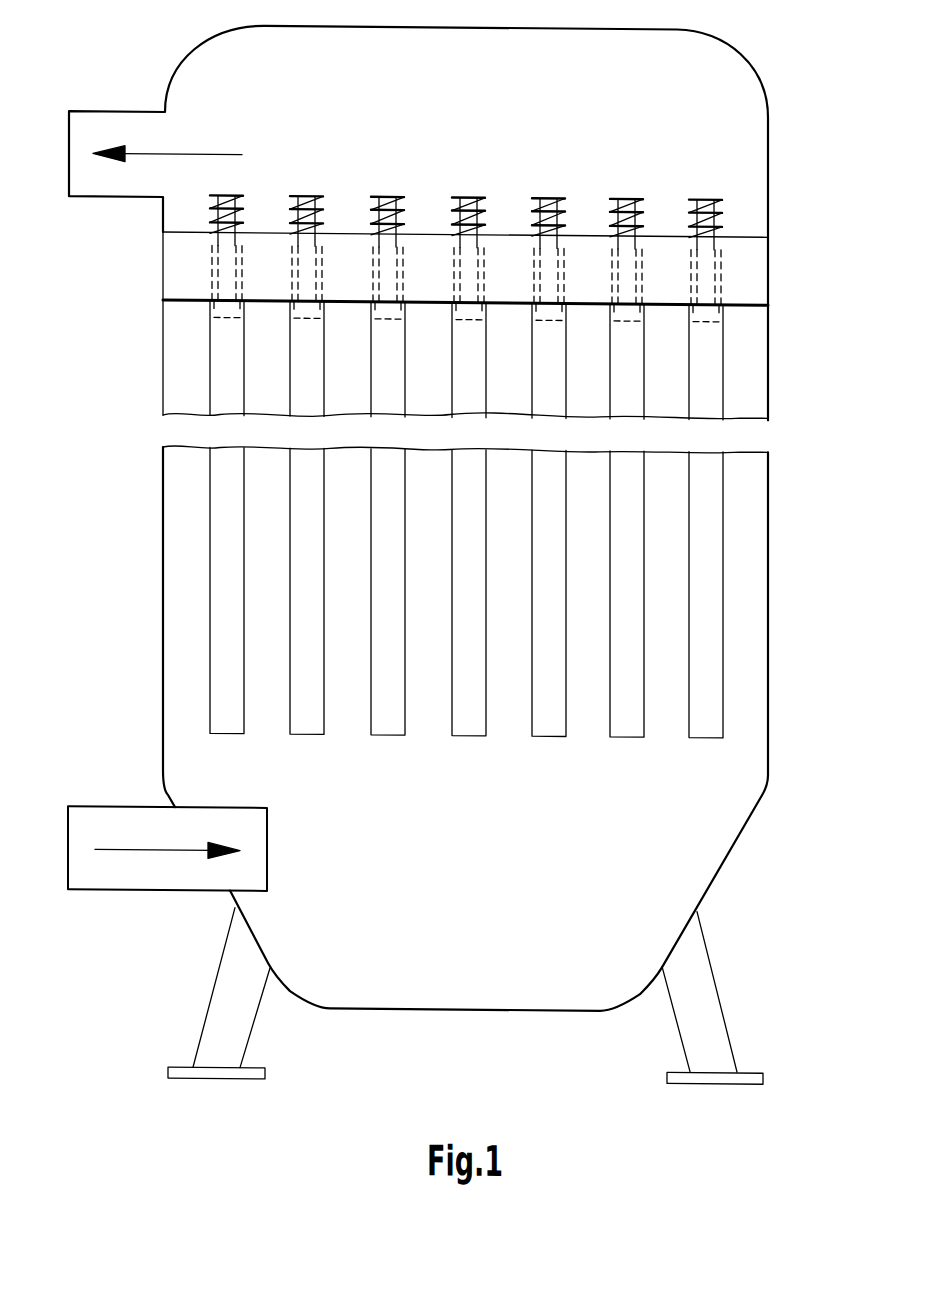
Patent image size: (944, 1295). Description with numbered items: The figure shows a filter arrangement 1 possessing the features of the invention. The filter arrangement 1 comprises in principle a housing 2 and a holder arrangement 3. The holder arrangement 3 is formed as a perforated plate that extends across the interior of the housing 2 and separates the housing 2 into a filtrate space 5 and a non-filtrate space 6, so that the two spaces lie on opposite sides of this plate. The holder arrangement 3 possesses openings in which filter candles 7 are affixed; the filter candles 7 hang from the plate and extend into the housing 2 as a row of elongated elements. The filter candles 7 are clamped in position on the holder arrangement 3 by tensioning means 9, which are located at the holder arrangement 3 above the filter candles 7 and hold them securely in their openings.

The filter arrangement 1 is at (470, 554).
The housing 2 is at (768, 722).
The holder arrangement 3 is at (745, 278).
The filtrate space 5 is at (312, 825).
The non-filtrate space 6 is at (732, 118).
The filter candles 7 is at (390, 572).
The tensioning means 9 is at (213, 227).